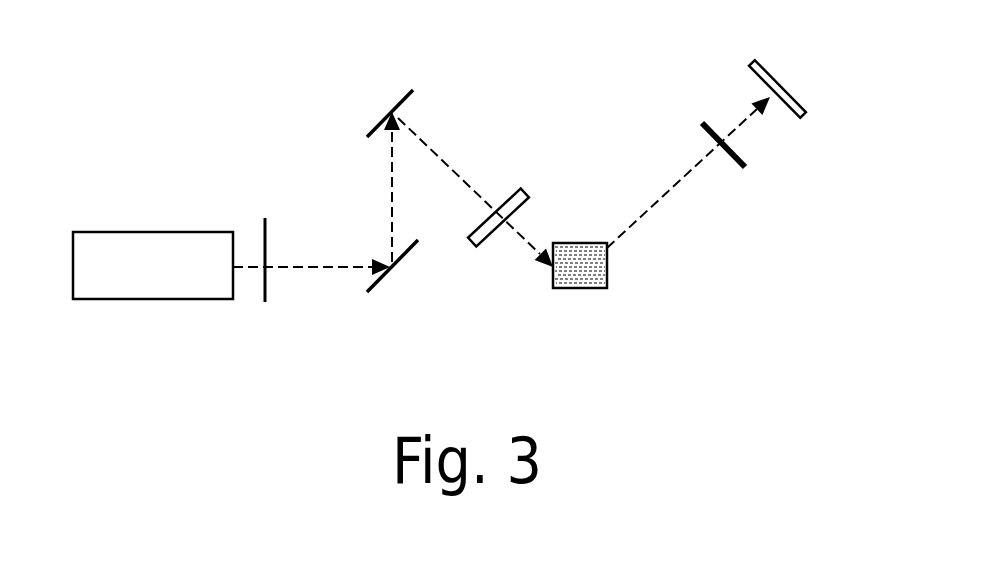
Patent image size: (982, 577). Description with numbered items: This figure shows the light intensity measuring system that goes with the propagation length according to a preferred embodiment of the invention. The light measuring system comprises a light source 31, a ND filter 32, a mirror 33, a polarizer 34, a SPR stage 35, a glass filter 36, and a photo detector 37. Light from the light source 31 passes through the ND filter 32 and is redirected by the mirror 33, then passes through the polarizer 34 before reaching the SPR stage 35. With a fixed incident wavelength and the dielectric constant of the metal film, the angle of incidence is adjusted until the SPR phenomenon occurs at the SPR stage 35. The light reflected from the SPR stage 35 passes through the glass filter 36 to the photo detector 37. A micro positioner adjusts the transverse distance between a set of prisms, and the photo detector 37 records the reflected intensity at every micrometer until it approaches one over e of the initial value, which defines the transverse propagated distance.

The light source 31 is at (153, 237).
The ND filter 32 is at (265, 231).
The mirror 33 is at (395, 107).
The polarizer 34 is at (510, 190).
The SPR stage 35 is at (590, 285).
The glass filter 36 is at (703, 122).
The photo detector 37 is at (775, 80).